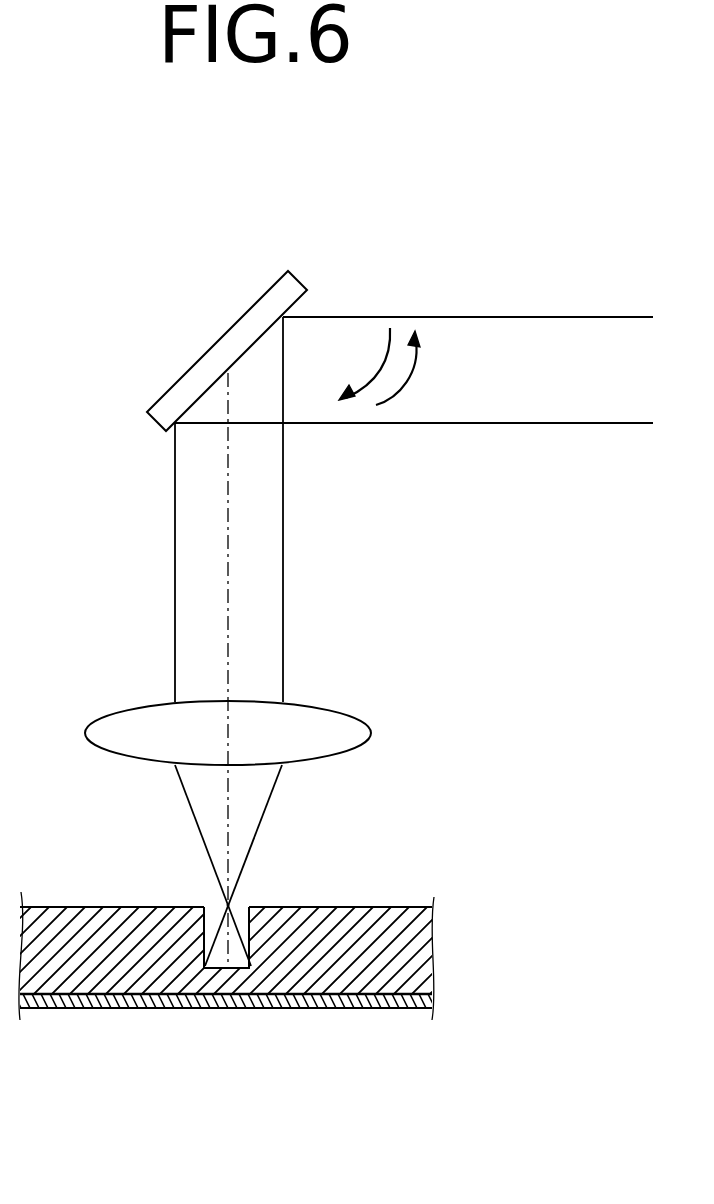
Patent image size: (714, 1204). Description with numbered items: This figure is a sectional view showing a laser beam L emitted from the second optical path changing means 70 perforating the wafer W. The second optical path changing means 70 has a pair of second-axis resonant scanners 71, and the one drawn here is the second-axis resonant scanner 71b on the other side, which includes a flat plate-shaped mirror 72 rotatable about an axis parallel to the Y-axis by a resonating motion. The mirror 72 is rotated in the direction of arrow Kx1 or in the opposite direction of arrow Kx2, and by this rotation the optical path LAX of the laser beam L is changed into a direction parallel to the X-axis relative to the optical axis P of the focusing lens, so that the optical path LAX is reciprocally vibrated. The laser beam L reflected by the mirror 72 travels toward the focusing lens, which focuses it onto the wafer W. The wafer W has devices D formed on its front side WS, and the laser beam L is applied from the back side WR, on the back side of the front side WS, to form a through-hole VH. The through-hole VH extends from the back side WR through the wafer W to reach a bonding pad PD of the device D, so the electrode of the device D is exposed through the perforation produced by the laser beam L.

The second optical path changing means 70 is at (264, 317).
The second-axis resonant scanner 71 is at (216, 319).
The second-axis resonant scanner on the other side 71b is at (216, 335).
The mirror 72 is at (196, 383).
The arrow Kx1 is at (385, 350).
The arrow Kx2 is at (380, 404).
The laser beam L is at (573, 423).
The optical path LAX is at (348, 605).
The optical axis P is at (232, 778).
The wafer W is at (267, 959).
The back side WR is at (370, 907).
The front side WS is at (224, 1032).
The through-hole VH is at (242, 918).
The device D is at (224, 1030).
The bonding pad PD is at (117, 1009).